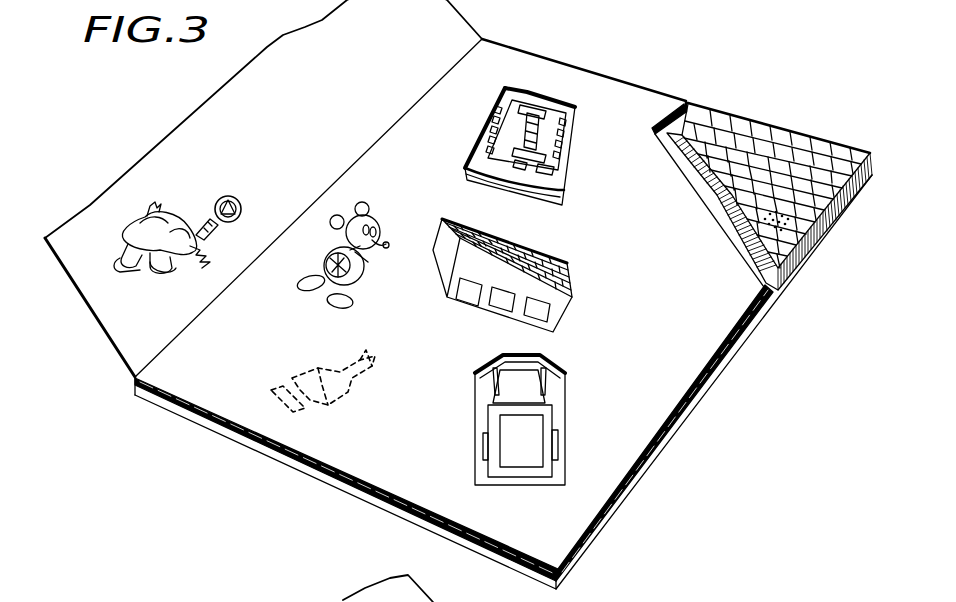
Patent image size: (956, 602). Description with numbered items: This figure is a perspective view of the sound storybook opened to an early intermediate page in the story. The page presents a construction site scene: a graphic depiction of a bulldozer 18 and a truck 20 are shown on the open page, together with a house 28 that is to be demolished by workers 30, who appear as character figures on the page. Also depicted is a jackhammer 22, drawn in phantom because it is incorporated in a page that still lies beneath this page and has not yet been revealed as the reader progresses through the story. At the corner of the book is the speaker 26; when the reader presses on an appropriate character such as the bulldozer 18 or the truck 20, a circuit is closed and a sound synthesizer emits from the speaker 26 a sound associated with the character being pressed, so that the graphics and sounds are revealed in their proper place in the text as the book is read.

The bulldozer 18 is at (553, 162).
The truck 20 is at (546, 418).
The jackhammer 22 is at (316, 372).
The speaker 26 is at (784, 229).
The house 28 is at (567, 283).
The workers 30 is at (240, 203).